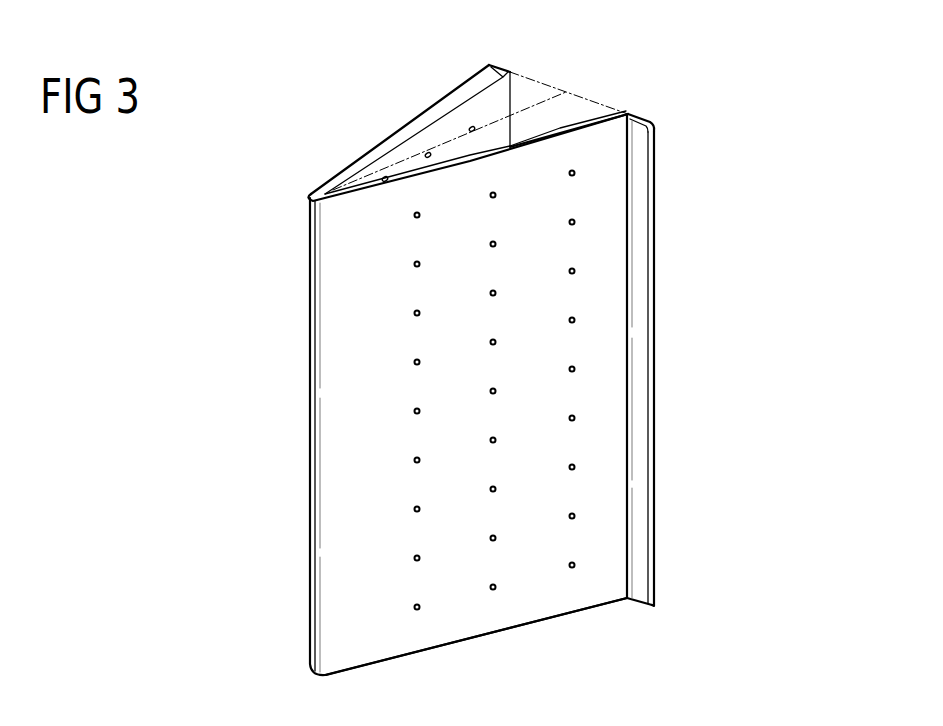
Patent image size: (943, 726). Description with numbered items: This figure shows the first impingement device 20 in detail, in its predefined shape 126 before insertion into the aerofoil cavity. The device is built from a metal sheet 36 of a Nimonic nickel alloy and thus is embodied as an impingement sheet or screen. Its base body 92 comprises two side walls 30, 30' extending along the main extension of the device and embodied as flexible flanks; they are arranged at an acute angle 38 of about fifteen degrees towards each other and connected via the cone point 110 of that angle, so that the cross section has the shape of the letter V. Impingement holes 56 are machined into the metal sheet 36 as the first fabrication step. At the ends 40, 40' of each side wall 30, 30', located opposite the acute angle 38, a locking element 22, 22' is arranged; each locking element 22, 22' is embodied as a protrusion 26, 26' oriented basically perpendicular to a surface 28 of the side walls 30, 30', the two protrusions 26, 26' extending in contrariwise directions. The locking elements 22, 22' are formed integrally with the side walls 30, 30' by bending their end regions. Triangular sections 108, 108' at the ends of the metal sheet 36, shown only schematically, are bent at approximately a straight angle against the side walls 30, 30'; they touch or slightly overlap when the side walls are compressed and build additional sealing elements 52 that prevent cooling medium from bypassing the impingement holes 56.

The first impingement device 20 is at (667, 113).
The locking element 22 is at (410, 110).
The protrusion 26 is at (410, 110).
The side wall 30 is at (400, 129).
The metal sheet 36 is at (407, 142).
The acute angle 38 is at (404, 171).
The end of side wall 40 is at (527, 74).
The sealing element 52 is at (552, 88).
The triangular section 108 is at (568, 74).
The triangular section 108' is at (593, 98).
The end of side wall 40' is at (673, 90).
The locking element 22' is at (694, 360).
The protrusion 26' is at (694, 360).
The side wall 30' is at (667, 368).
The predefined shape 126 is at (667, 342).
The surface of the side walls 28 is at (593, 404).
The impingement holes 56 is at (574, 470).
The cone point 110 is at (312, 453).
The base body 92 is at (450, 622).